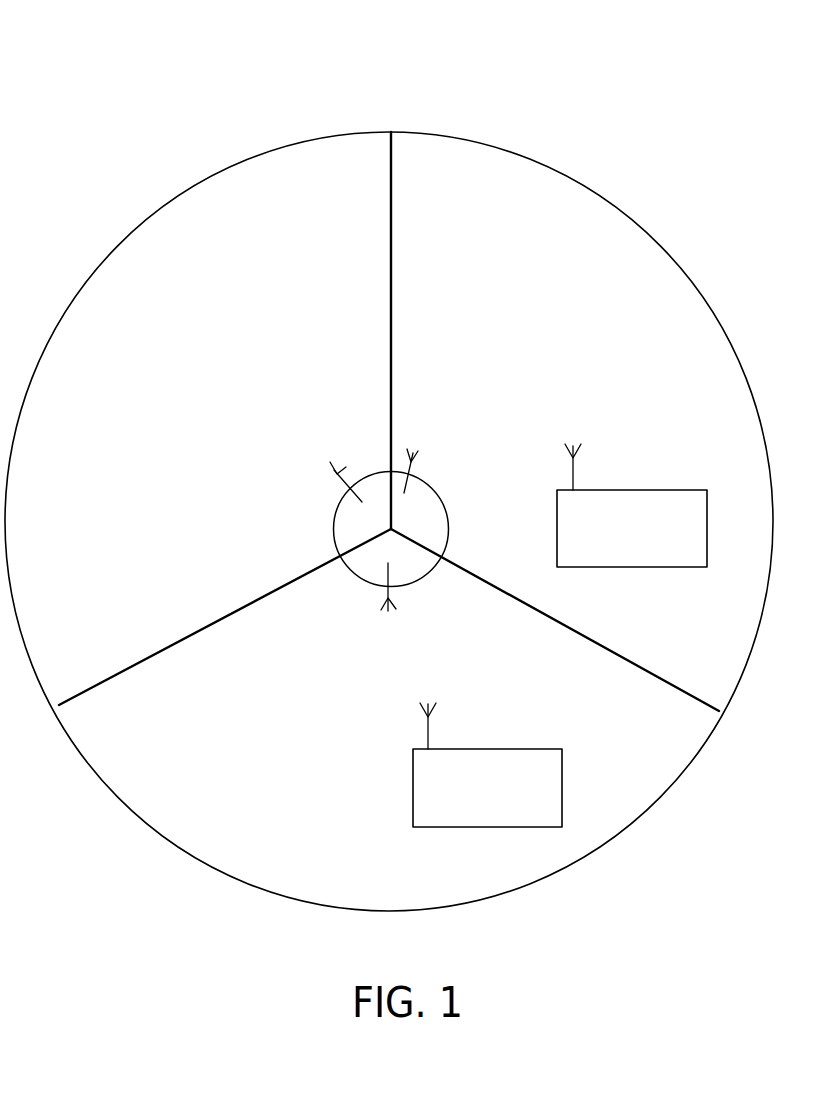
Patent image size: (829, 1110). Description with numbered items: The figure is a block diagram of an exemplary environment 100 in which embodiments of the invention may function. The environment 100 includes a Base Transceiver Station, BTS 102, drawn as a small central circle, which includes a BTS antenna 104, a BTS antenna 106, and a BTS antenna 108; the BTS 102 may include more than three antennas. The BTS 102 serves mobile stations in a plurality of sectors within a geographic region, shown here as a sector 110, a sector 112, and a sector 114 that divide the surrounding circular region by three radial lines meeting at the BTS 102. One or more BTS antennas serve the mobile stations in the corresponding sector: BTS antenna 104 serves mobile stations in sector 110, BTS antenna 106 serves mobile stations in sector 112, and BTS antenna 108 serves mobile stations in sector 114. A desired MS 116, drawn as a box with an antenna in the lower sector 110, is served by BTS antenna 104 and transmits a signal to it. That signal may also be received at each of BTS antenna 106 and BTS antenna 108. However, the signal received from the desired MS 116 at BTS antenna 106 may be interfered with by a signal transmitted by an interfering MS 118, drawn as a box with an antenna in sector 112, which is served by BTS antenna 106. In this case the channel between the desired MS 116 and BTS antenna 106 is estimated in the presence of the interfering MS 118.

The environment 100 is at (264, 56).
The Base Transceiver Station (BTS) 102 is at (410, 560).
The BTS antenna 104 is at (344, 625).
The BTS antenna 106 is at (473, 446).
The BTS antenna 108 is at (277, 504).
The sector 110 is at (225, 707).
The sector 112 is at (555, 442).
The sector 114 is at (226, 330).
The desired MS 116 is at (515, 765).
The interfering MS 118 is at (660, 505).